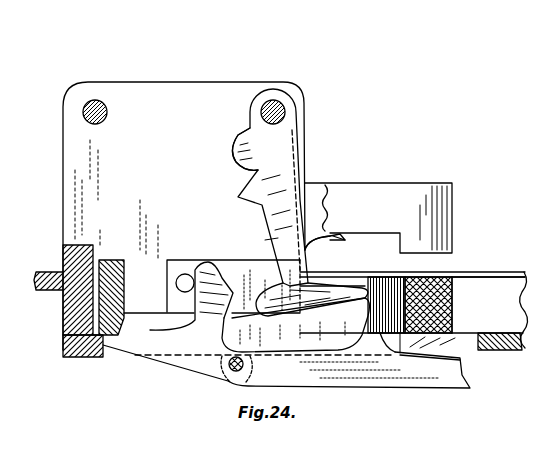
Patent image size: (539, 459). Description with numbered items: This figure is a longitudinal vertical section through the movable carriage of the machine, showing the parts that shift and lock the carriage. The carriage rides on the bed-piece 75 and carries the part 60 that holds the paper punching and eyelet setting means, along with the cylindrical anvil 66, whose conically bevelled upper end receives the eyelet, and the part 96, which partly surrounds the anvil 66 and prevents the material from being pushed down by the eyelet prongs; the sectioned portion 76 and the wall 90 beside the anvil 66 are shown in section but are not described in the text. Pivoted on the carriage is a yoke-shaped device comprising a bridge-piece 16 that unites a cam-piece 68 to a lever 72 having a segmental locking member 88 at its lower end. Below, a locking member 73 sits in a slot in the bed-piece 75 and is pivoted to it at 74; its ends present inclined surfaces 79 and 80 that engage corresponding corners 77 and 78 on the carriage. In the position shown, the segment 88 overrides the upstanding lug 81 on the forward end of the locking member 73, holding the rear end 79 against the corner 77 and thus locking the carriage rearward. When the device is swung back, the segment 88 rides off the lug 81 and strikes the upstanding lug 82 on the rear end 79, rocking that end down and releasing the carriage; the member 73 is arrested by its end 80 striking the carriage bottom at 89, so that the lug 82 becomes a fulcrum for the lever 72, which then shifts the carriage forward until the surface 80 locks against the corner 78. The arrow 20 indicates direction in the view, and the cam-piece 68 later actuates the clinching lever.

The bridge-piece 16 is at (290, 106).
The direction arrow 20 is at (14, 306).
The part containing paper punching and eyelet setting means 60 is at (415, 195).
The cylindrical anvil 66 is at (379, 280).
The cam-piece 68 is at (240, 148).
The lever 72 is at (300, 272).
The locking member 73 is at (356, 370).
The pivot 74 is at (228, 368).
The bed-piece 75 is at (458, 342).
The cross-hatched block 76 is at (432, 318).
The corner 77 is at (90, 328).
The corner 78 is at (450, 305).
The rear end inclined surface 79 is at (120, 340).
The forward end inclined surface 80 is at (462, 362).
The upstanding lug 81 is at (366, 316).
The upstanding lug 82 is at (207, 285).
The segmental locking member 88 is at (275, 312).
The bottom of the carriage 89 is at (415, 355).
The wall 90 is at (446, 330).
The part partly surrounding the anvil 96 is at (383, 275).